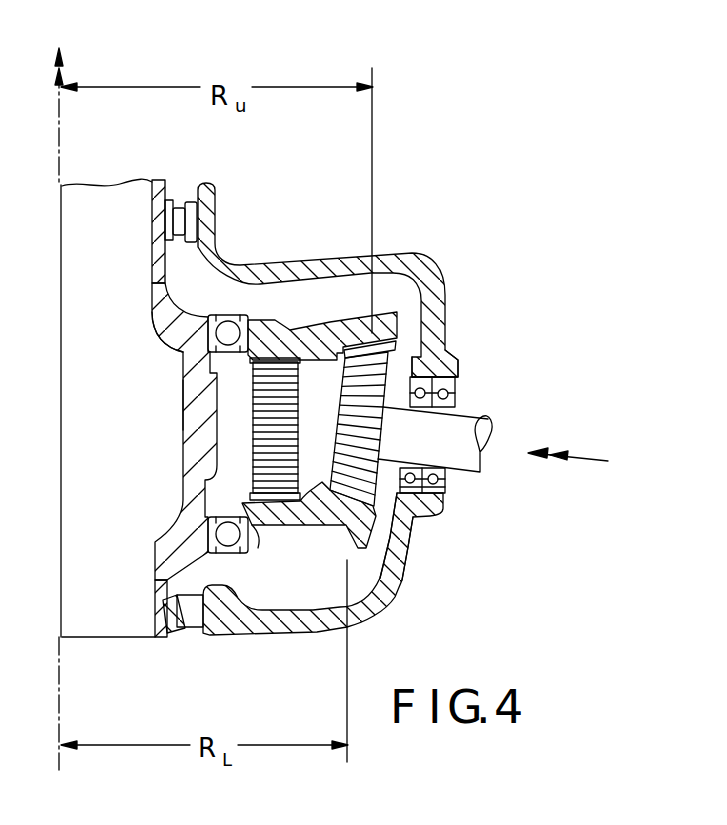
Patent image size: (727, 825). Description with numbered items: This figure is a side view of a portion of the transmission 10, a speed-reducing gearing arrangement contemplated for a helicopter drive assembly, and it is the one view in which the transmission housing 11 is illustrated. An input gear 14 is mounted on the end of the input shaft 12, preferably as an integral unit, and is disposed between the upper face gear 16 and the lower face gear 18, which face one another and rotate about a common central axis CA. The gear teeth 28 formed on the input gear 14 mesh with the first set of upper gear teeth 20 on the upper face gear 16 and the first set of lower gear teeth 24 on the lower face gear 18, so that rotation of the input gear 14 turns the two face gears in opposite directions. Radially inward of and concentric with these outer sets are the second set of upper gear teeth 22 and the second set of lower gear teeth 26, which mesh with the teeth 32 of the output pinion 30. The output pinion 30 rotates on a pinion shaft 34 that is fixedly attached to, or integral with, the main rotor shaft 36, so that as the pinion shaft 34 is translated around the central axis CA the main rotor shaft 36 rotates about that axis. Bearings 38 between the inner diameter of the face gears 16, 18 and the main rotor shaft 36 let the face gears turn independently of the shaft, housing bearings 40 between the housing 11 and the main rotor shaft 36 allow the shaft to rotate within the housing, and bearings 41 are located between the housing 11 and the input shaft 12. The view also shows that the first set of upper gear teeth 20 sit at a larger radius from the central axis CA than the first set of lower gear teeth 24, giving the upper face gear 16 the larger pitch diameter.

The transmission 10 is at (416, 217).
The transmission housing 11 is at (387, 597).
The input shaft 12 is at (462, 433).
The input gear 14 is at (418, 377).
The upper face gear 16 is at (385, 325).
The lower face gear 18 is at (297, 527).
The first set of upper gear teeth 20 is at (377, 397).
The second set of upper gear teeth 22 is at (302, 358).
The first set of lower gear teeth 24 is at (409, 535).
The second set of lower gear teeth 26 is at (259, 532).
The gear teeth 28 is at (414, 517).
The output pinion 30 is at (192, 402).
The teeth 32 is at (200, 443).
The pinion shaft 34 is at (192, 320).
The main rotor shaft 36 is at (167, 195).
The bearings 38 is at (242, 322).
The housing bearings 40 is at (183, 217).
The bearings 41 is at (455, 395).
The central axis CA is at (62, 168).